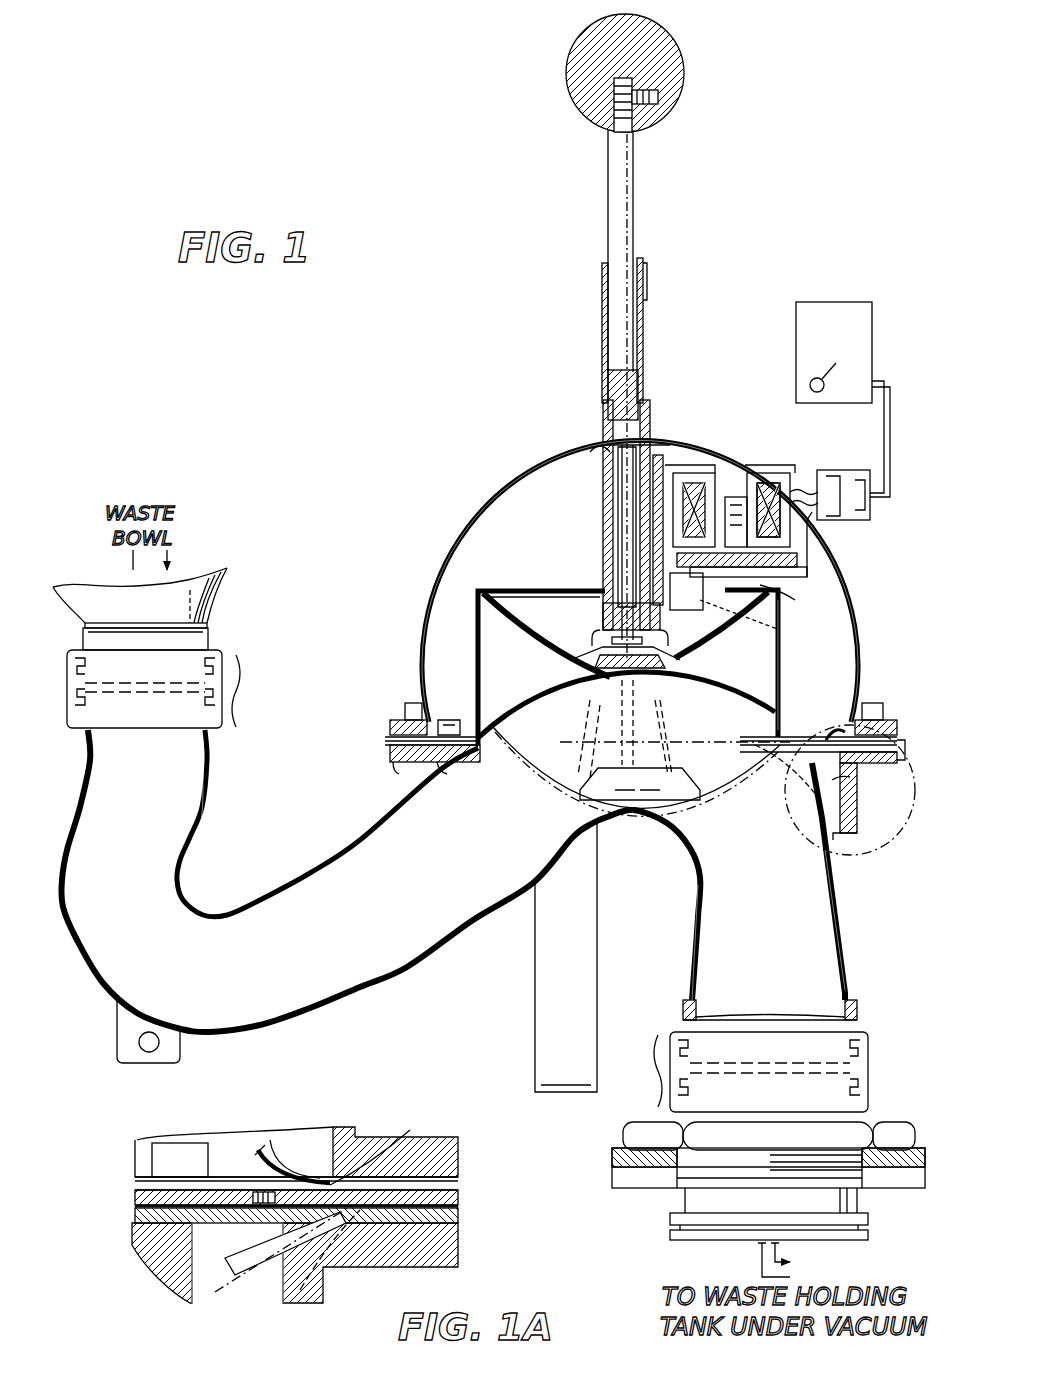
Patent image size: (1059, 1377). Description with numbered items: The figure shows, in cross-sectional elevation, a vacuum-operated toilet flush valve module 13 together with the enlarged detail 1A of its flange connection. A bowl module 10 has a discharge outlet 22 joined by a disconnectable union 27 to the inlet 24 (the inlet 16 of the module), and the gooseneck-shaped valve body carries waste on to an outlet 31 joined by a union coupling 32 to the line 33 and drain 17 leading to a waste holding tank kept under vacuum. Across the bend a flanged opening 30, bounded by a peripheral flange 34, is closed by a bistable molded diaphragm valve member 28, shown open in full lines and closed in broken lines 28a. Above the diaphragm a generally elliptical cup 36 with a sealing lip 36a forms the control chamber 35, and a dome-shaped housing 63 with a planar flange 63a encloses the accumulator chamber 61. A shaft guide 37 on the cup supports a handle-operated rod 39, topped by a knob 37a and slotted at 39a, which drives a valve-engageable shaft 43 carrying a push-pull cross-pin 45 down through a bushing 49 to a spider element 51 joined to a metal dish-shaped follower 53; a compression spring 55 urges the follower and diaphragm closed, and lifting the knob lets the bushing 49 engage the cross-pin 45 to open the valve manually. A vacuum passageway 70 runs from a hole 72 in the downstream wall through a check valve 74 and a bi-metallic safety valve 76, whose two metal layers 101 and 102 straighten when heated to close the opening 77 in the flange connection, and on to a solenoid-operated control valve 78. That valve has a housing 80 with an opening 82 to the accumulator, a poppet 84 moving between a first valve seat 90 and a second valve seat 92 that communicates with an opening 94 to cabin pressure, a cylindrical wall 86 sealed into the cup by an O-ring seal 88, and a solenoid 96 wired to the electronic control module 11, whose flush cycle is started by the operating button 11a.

In FIG. 1, the bowl module 10 is at (212, 615).
In FIG. 1, the electronic control module 11 is at (793, 357).
In FIG. 1, the operating button or handle 11a is at (837, 374).
In FIG. 1, the flush valve module 13 is at (480, 455).
In FIG. 1, the inlet 16 is at (190, 862).
In FIG. 1, the outlet or drain 17 is at (865, 970).
In FIG. 1, the discharge outlet or drain 22 is at (140, 598).
In FIG. 1, the inlet 24 is at (347, 896).
In FIG. 1, the disconnectable union 27 is at (172, 689).
In FIG. 1, the diaphragm valve member 28 is at (762, 712).
In FIG. 1, the closed position of diaphragm (broken lines) / button 28a is at (675, 721).
In FIG. 1, the flanged opening 30 is at (520, 770).
In FIG. 1, the outlet 31 is at (843, 915).
In FIG. 1, the union coupling 32 is at (743, 1072).
In FIG. 1, the vacuum side of discharge valve and line 33 is at (696, 951).
In FIG. 1, the peripheral flange 34 is at (395, 768).
In FIG. 1A, the peripheral flange 34 is at (440, 1250).
In FIG. 1, the control chamber 35 is at (755, 668).
In FIG. 1, the cup 36 is at (470, 650).
In FIG. 1, the lip of cup 36a is at (388, 740).
In FIG. 1A, the lip of cup 36a is at (450, 1200).
In FIG. 1, the shaft guide 37 is at (650, 350).
In FIG. 1, the knob 37a is at (684, 50).
In FIG. 1, the handle operated rod 39 is at (610, 203).
In FIG. 1, the elongate cross-slot 39a is at (614, 555).
In FIG. 1, the valve engageable shaft 43 is at (618, 485).
In FIG. 1, the push-pull cross-pin 45 is at (588, 450).
In FIG. 1, the bushing 49 is at (600, 612).
In FIG. 1, the spider element 51 is at (575, 675).
In FIG. 1, the shaft follower 53 is at (540, 660).
In FIG. 1, the compression spring 55 is at (680, 740).
In FIG. 1, the accumulator chamber 61 is at (880, 668).
In FIG. 1, the dome-shaped housing 63 is at (492, 492).
In FIG. 1, the planar flange 63a is at (400, 718).
In FIG. 1A, the planar flange 63a is at (450, 1157).
In FIG. 1, the vacuum passageway 70 is at (830, 800).
In FIG. 1A, the vacuum passageway 70 is at (305, 1140).
In FIG. 1, the hole 72 is at (815, 800).
In FIG. 1, the check valve 74 is at (852, 777).
In FIG. 1A, the check valve 74 is at (228, 1282).
In FIG. 1, the safety valve (bi-metallic valve) 76 is at (845, 725).
In FIG. 1A, the safety valve (bi-metallic valve) 76 is at (310, 1160).
In FIG. 1, the flange connection / vacuum opening 77 is at (790, 770).
In FIG. 1A, the flange connection / vacuum opening 77 is at (312, 1235).
In FIG. 1, the solenoid operated control valve 78 is at (710, 470).
In FIG. 1, the housing 80 is at (810, 577).
In FIG. 1, the opening 82 is at (770, 663).
In FIG. 1, the poppet or clapper 84 is at (800, 560).
In FIG. 1, the cylindrical wall 86 is at (700, 630).
In FIG. 1, the O-ring seal 88 is at (740, 615).
In FIG. 1, the valve seat 90 is at (800, 600).
In FIG. 1, the second valve seat 92 is at (686, 591).
In FIG. 1, the opening 94 is at (768, 482).
In FIG. 1, the solenoid 96 is at (820, 470).
In FIG. 1A, the metal layer 101 is at (275, 1150).
In FIG. 1A, the metal layer 102 is at (392, 1146).
In FIG. 1, the section lines A—A (enlarged view) 1A is at (870, 708).